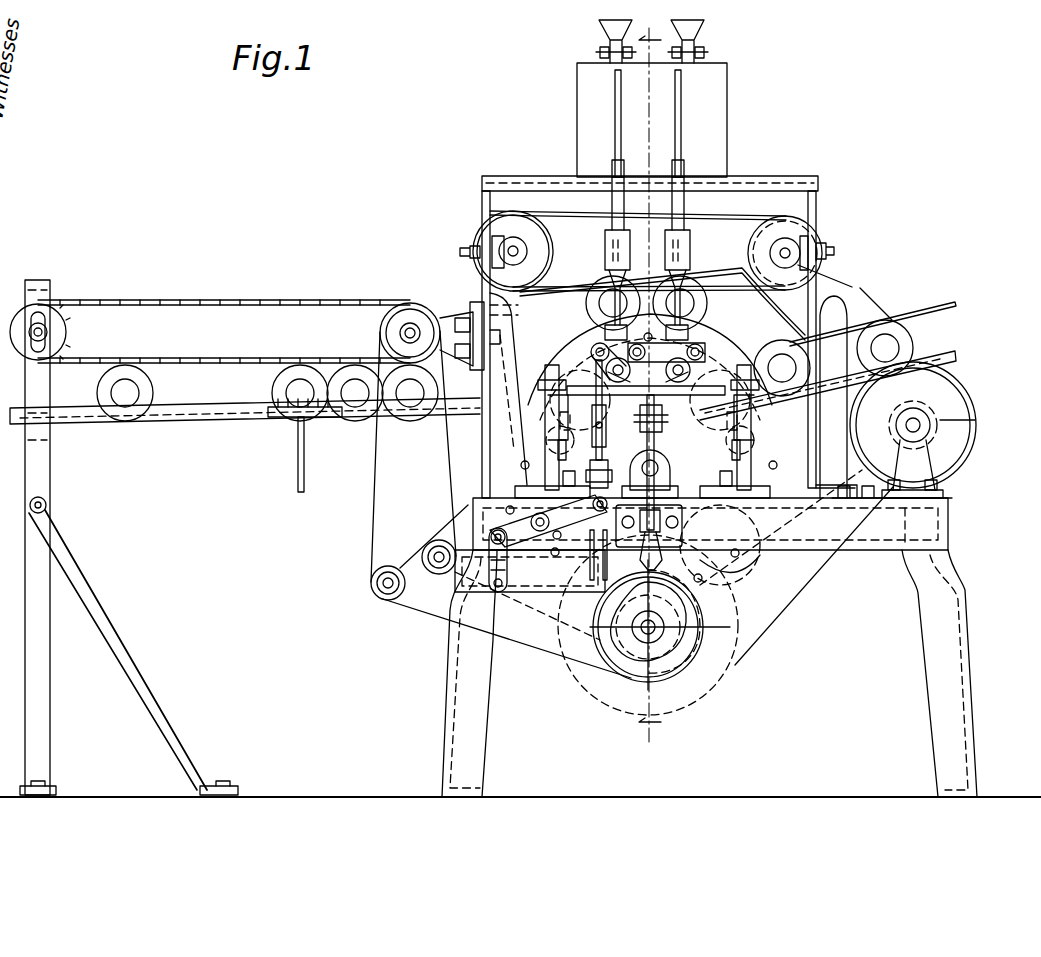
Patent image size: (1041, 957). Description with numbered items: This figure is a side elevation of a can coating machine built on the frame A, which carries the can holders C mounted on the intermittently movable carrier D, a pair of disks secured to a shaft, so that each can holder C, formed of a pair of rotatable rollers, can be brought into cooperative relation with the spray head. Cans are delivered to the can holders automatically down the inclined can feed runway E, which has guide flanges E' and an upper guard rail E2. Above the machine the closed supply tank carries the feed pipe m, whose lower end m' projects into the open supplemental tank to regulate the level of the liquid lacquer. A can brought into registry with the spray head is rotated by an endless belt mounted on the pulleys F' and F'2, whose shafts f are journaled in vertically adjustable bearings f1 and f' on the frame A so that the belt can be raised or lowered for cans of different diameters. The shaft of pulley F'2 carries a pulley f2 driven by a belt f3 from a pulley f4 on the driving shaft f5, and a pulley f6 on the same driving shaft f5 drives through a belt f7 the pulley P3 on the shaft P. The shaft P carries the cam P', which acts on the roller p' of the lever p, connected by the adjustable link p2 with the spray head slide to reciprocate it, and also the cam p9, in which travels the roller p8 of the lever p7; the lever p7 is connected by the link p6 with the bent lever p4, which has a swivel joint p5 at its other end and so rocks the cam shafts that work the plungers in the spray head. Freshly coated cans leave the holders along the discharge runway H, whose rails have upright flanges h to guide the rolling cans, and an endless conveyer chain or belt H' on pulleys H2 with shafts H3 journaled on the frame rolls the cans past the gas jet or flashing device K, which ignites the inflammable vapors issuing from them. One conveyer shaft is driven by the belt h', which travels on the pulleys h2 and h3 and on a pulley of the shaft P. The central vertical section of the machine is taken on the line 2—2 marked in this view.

The frame A is at (98, 598).
The discharge runway H is at (247, 371).
The endless conveyer chain or belt H' is at (181, 331).
The pulleys H2 is at (328, 370).
The shafts H3 is at (410, 333).
The upright flanges h is at (245, 424).
The belt h' is at (501, 504).
The pulley h2 is at (422, 552).
The pulley h3 is at (450, 572).
The gas jet or flashing device K is at (283, 420).
The feed pipe m is at (652, 98).
The lower end of feed pipe m' is at (647, 205).
The section line 2— 2 is at (650, 378).
The pulley F' is at (638, 251).
The vertically adjustable bearings f1 is at (506, 251).
The pulley F'2 is at (807, 242).
The shafts f is at (665, 290).
The vertically adjustable bearing f' is at (662, 304).
The pulley f2 is at (835, 263).
The belt f3 is at (889, 297).
The can feed runway E is at (858, 358).
The guide flanges E' is at (848, 385).
The upper guard rail E2 is at (935, 300).
The pulley f4 is at (978, 428).
The driving shaft f5 is at (925, 430).
The pulley f6 is at (965, 455).
The belt f7 is at (843, 570).
The can holder C is at (712, 362).
The carrier D is at (646, 431).
The lever p is at (655, 462).
The roller p' is at (661, 537).
The adjustable link p2 is at (655, 428).
The bent lever p4 is at (515, 498).
The swivel joint p5 is at (592, 476).
The link p6 is at (494, 572).
The lever p7 is at (560, 585).
The roller p8 is at (718, 585).
The cam p9 is at (663, 672).
The shaft P is at (670, 625).
The cam P' is at (630, 621).
The pulley P3 is at (588, 712).